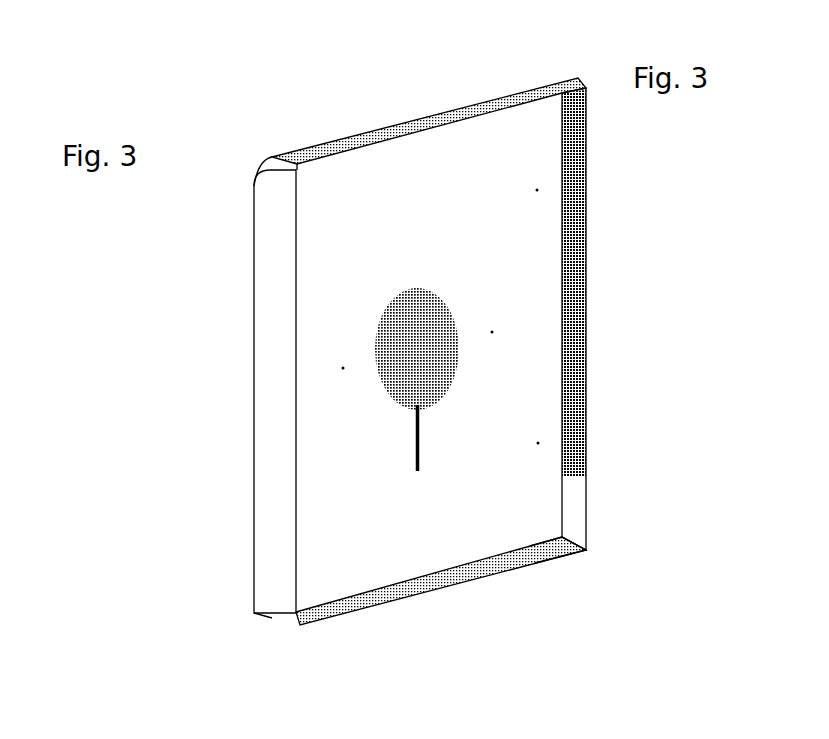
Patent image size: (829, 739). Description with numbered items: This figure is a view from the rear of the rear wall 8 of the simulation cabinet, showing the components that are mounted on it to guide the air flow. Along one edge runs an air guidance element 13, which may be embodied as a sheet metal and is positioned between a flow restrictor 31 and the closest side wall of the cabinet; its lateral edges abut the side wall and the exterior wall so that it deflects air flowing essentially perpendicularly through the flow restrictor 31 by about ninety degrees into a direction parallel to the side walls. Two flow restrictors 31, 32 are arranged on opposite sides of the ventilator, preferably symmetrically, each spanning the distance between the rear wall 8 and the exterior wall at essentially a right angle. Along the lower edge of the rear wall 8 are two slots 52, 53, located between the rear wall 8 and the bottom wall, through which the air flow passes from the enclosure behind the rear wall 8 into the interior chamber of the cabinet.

The rear wall 8 is at (294, 105).
The air guidance element 13 is at (276, 358).
The flow restrictor 31 is at (274, 162).
The flow restrictor 32 is at (586, 320).
The slot 52 is at (350, 613).
The slot 53 is at (545, 560).